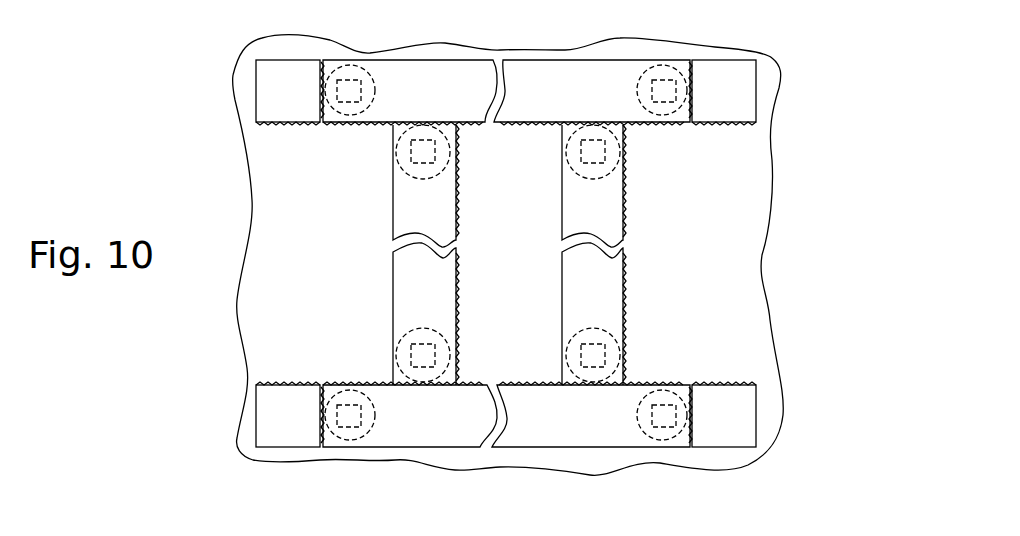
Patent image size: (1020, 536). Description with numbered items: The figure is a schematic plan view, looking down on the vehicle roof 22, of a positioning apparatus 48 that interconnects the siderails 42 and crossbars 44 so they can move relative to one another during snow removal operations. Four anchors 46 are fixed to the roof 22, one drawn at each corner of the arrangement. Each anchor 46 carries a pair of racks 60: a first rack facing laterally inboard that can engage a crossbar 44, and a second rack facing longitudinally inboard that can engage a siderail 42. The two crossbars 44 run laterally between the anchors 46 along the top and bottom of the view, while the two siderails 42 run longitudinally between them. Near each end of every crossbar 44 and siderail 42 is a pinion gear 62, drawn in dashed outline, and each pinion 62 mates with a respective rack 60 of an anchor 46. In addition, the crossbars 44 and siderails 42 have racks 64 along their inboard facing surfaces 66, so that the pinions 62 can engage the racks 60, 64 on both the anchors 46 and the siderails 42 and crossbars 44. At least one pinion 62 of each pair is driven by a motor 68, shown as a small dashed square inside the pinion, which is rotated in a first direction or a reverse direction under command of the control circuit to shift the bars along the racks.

The roof 22 is at (247, 228).
The siderails 42 is at (393, 300).
The crossbars 44 is at (525, 60).
The anchors 46 is at (757, 102).
The positioning apparatus 48 is at (222, 411).
The racks 60 is at (322, 68).
The pinion gears 62 is at (375, 80).
The racks 64 is at (527, 125).
The inboard facing surfaces 66 is at (562, 262).
The motor 68 is at (592, 352).